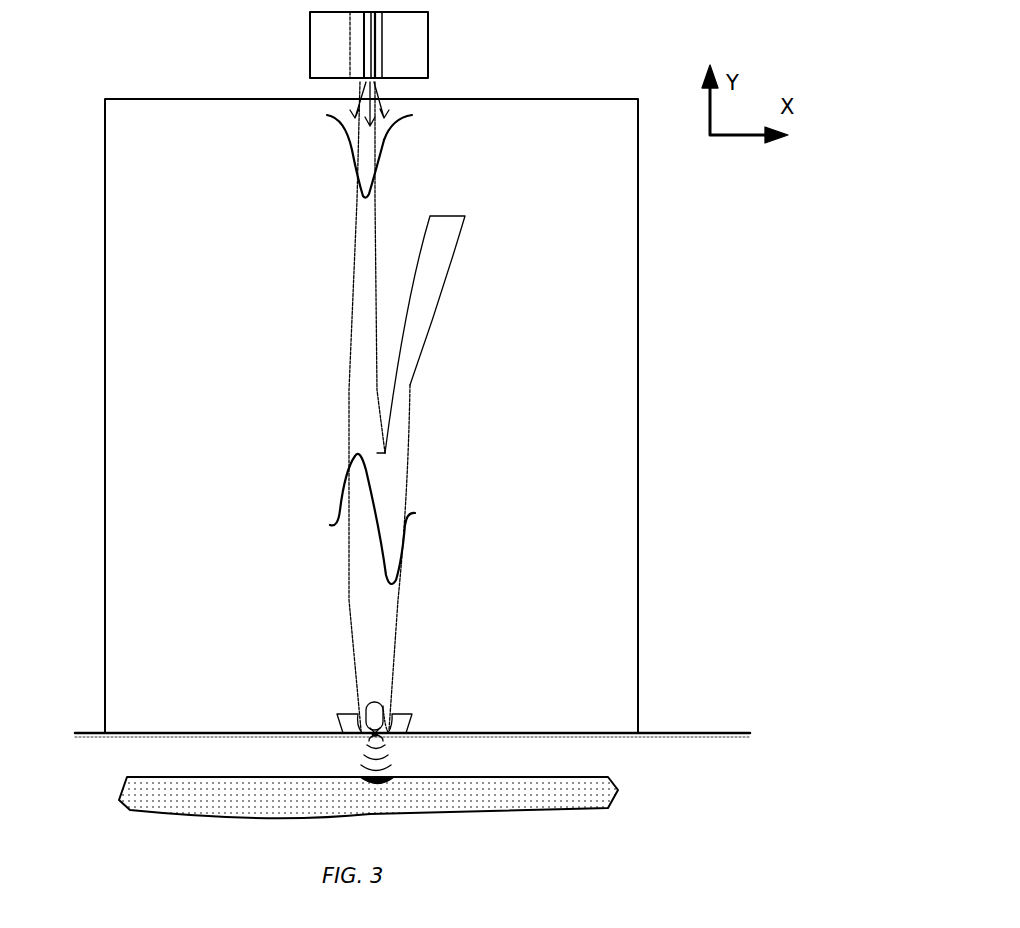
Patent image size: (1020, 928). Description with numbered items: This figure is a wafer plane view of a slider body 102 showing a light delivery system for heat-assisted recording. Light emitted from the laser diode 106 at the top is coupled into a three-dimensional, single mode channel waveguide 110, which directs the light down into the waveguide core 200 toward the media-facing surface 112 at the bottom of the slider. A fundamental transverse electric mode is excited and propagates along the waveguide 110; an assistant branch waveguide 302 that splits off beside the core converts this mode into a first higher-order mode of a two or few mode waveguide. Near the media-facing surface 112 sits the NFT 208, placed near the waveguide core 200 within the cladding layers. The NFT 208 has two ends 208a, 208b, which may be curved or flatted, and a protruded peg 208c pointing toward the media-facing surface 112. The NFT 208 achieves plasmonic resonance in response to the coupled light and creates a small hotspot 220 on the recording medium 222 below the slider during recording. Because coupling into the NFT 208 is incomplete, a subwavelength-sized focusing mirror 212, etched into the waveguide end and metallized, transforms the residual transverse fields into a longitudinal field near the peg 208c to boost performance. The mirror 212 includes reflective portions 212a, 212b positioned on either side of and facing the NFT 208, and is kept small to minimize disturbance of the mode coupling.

The slider body 102 is at (543, 99).
The laser diode 106 is at (350, 36).
The channel waveguide 110 is at (284, 262).
The media-facing surface 112 is at (708, 737).
The waveguide core 200 is at (366, 291).
The NFT 208 is at (356, 710).
The NFT end 208a is at (396, 706).
The NFT end 208b is at (390, 736).
The protruded peg 208c is at (372, 737).
The focusing mirror 212 is at (447, 741).
The reflective portion 212a is at (338, 716).
The reflective portion 212b is at (415, 719).
The hotspot 220 is at (384, 793).
The recording medium 222 is at (577, 798).
The assistant branch waveguide 302 is at (443, 258).